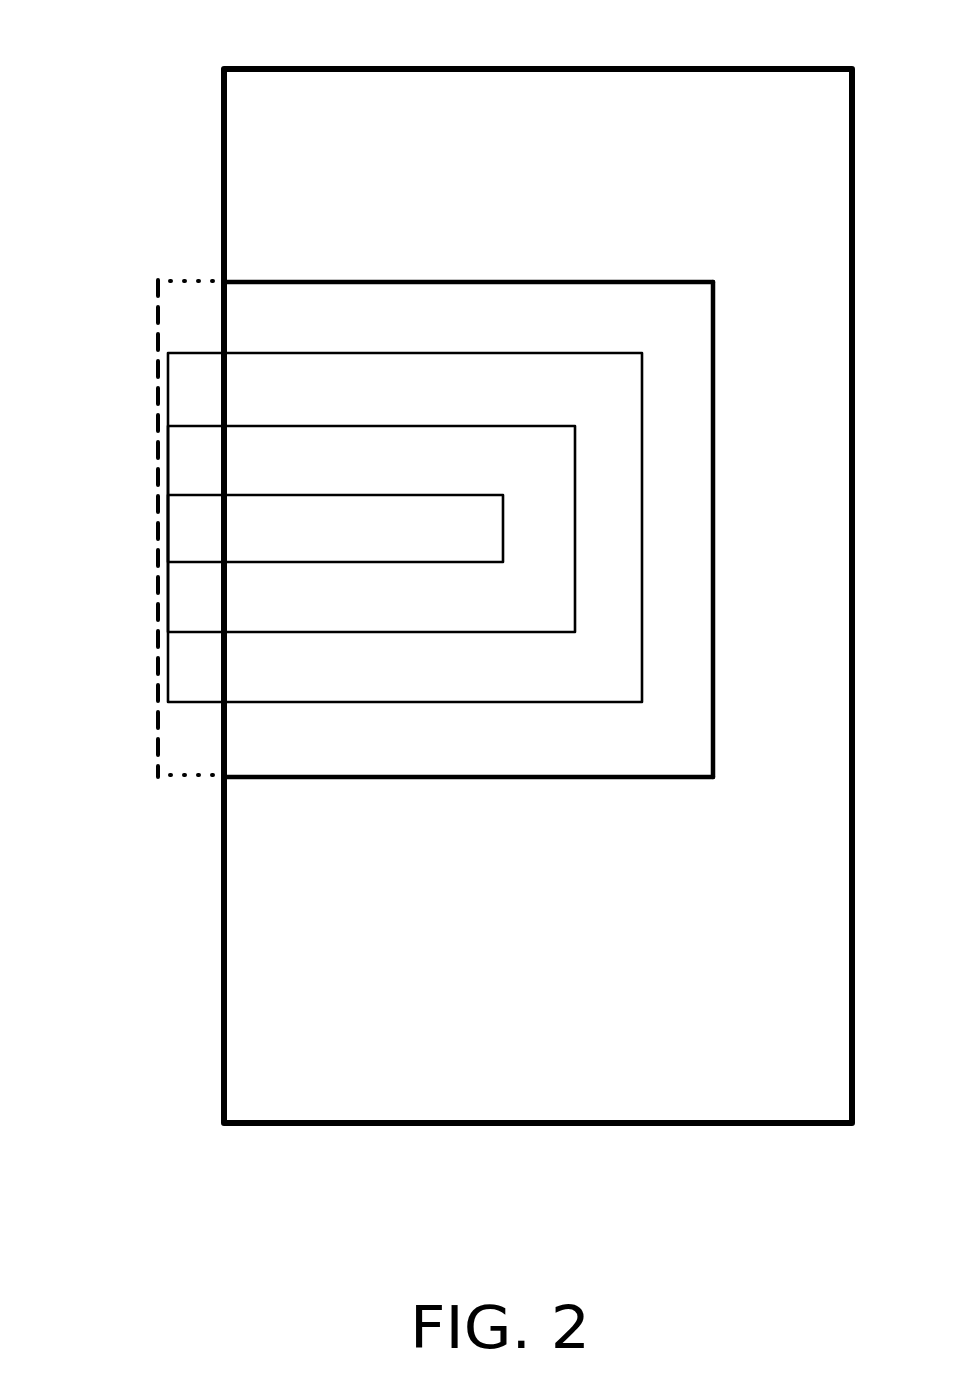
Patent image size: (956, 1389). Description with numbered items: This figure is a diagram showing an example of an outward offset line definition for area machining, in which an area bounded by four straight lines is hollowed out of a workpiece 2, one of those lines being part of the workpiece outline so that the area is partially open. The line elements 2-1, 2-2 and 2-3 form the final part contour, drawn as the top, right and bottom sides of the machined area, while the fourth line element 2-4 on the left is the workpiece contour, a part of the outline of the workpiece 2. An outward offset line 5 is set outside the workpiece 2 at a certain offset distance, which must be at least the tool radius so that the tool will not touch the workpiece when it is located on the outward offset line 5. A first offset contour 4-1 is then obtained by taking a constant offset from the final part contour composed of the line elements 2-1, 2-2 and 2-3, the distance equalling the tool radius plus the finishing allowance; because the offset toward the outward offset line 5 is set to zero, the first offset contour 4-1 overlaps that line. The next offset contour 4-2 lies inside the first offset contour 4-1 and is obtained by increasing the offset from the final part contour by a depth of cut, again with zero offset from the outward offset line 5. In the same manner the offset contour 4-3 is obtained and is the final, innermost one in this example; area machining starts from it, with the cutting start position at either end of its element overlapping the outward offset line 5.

The substrate 2 is at (556, 91).
The line element 2-1 is at (530, 283).
The line element 2-2 is at (714, 548).
The line element 2-3 is at (575, 778).
The workpiece contour 2-4 is at (220, 733).
The first offset contour 4-1 is at (418, 352).
The offset contour 4-2 is at (440, 425).
The offset contour 4-3 is at (403, 493).
The outward offset line 5 is at (150, 655).